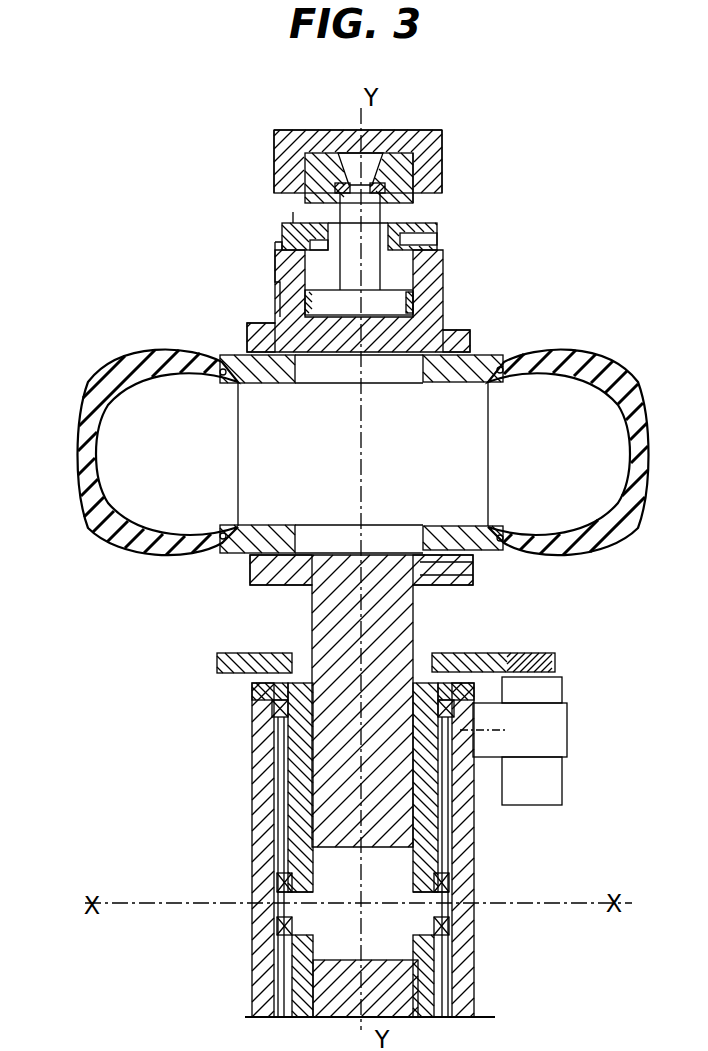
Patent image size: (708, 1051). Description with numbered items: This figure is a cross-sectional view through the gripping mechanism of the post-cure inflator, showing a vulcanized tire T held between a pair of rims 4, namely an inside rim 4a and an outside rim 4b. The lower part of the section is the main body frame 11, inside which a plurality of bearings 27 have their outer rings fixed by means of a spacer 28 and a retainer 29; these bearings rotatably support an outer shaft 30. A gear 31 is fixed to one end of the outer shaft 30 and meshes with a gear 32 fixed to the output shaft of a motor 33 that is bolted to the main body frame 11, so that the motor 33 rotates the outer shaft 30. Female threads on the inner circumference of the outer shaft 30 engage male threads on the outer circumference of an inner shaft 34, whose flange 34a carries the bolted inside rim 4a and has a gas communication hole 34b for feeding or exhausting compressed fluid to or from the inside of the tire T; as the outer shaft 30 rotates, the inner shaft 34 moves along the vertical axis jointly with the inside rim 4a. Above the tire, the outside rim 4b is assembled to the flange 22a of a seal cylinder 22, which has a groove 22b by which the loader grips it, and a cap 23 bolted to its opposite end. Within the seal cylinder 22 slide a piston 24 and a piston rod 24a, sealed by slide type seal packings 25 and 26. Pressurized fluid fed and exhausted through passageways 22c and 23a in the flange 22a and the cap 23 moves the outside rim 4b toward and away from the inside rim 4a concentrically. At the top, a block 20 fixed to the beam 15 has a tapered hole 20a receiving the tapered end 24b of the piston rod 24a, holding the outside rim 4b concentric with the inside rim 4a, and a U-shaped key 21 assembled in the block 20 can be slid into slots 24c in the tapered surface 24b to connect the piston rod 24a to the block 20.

The vulcanized tire T is at (88, 398).
The rims 4 is at (228, 386).
The inside rim 4a is at (482, 532).
The outside rim 4b is at (480, 383).
The main body frame 11 is at (253, 993).
The beam 15 is at (272, 173).
The block 20 is at (275, 167).
The tapered hole 20a is at (315, 132).
The U-shaped key 21 is at (396, 128).
The seal cylinder 22 is at (277, 305).
The flange 22a is at (250, 340).
The groove 22b is at (275, 289).
The passageway 22c is at (470, 331).
The cap 23 is at (286, 223).
The passageway 23a is at (437, 238).
The piston 24 is at (395, 300).
The piston rod 24a is at (388, 216).
The tapered end 24b is at (442, 173).
The slots 24c is at (442, 150).
The slide type seal packing 25 is at (445, 295).
The slide type seal packing 26 is at (320, 216).
The bearings 27 is at (252, 720).
The spacer 28 is at (285, 830).
The retainer 29 is at (254, 692).
The outer shaft 30 is at (278, 862).
The gear 31 is at (218, 663).
The gear 32 is at (556, 658).
The motor 33 is at (568, 735).
The inner shaft 34 is at (320, 620).
The flange 34a is at (252, 566).
The gas communication hole 34b is at (476, 572).